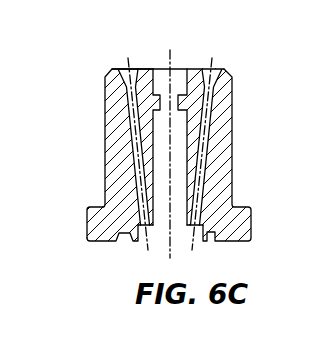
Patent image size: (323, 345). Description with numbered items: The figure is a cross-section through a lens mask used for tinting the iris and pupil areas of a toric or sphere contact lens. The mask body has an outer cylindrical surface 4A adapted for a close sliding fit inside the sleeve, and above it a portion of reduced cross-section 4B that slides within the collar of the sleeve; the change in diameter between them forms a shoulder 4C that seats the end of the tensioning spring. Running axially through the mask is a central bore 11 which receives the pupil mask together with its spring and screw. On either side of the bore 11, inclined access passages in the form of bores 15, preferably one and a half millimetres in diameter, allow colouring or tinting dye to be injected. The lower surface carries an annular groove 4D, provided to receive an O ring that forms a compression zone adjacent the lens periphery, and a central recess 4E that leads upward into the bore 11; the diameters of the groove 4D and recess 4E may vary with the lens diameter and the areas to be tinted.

The bores 15 is at (114, 69).
The central bore 11 is at (178, 147).
The outer cylindrical surface 4A is at (90, 232).
The portion of reduced cross-section 4B is at (105, 121).
The shoulder 4C is at (103, 207).
The annular groove 4D is at (216, 241).
The central recess 4E is at (178, 224).